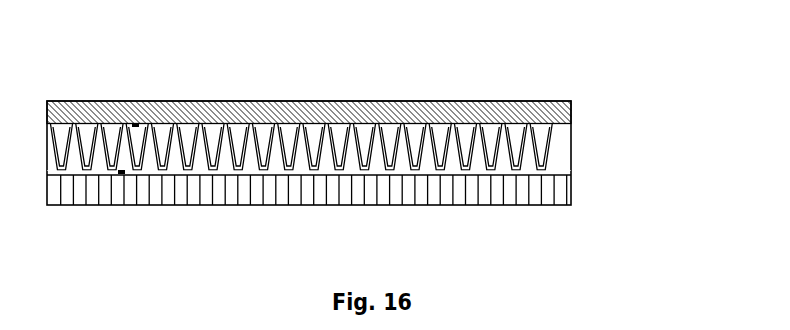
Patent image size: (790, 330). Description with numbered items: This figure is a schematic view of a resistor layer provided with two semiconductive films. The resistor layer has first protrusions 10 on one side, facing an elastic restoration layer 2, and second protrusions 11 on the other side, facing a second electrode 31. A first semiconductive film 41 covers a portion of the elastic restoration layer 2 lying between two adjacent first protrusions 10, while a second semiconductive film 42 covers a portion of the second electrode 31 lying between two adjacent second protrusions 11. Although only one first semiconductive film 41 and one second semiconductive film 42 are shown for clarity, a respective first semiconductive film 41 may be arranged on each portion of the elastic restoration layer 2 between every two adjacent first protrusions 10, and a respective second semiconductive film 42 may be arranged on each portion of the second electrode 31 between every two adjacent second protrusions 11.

The second electrode 31 is at (560, 113).
The second protrusions 11 is at (552, 143).
The first protrusions 10 is at (528, 169).
The elastic restoration layer 2 is at (555, 193).
The second semiconductive film 42 is at (135, 127).
The first semiconductive film 41 is at (122, 173).